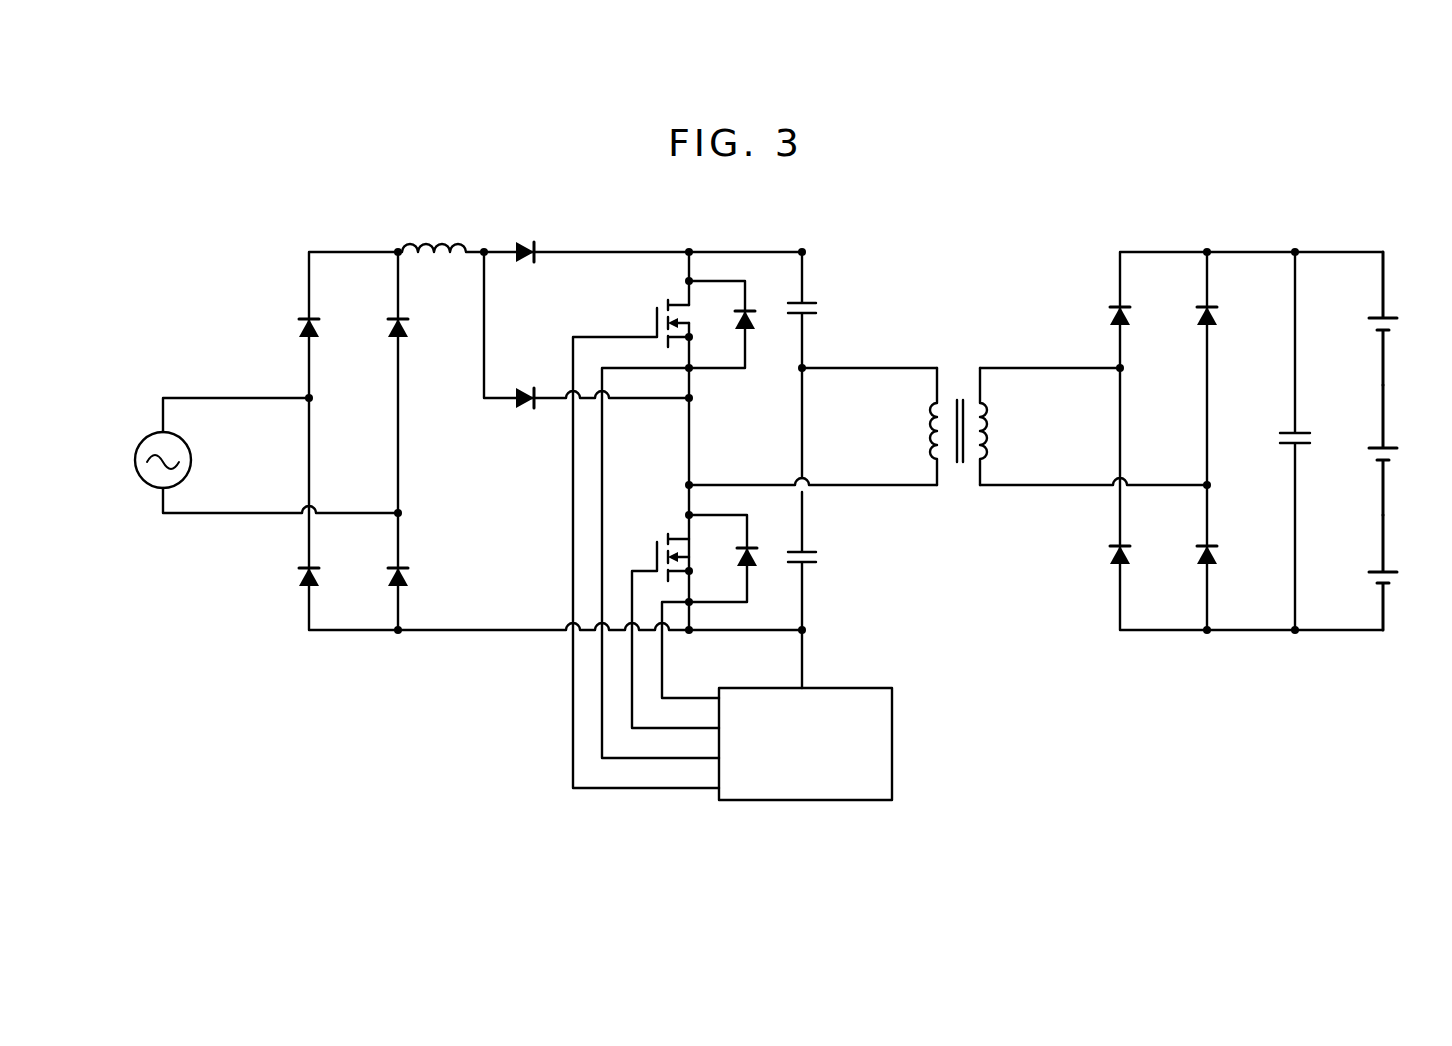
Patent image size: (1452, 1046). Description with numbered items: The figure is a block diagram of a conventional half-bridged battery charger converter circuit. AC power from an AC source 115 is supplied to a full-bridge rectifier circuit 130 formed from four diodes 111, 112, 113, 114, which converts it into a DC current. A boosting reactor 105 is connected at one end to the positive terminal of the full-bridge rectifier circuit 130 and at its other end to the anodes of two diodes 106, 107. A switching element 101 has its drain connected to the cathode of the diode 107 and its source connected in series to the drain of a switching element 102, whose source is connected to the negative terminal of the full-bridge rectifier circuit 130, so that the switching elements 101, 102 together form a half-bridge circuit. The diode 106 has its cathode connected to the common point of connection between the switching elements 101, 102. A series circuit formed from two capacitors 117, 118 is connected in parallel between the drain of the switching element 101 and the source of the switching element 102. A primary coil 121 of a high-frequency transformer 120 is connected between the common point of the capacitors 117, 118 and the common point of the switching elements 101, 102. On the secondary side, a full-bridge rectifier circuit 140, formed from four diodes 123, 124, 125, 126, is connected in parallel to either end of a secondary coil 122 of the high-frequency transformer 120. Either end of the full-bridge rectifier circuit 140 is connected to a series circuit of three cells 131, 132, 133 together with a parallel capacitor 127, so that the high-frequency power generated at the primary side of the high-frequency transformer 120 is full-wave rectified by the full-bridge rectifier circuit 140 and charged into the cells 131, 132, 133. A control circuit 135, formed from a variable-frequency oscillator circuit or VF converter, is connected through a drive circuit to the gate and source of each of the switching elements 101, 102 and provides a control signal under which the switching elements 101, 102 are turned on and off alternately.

The switching element 101 is at (601, 310).
The switching element 102 is at (612, 560).
The boosting reactor 105 is at (425, 240).
The diode 106 is at (521, 410).
The diode 107 is at (528, 233).
The diode 111 is at (298, 333).
The diode 112 is at (287, 637).
The diode 113 is at (408, 344).
The diode 114 is at (415, 578).
The AC source 115 is at (152, 498).
The capacitor 117 is at (838, 300).
The capacitor 118 is at (842, 572).
The high-frequency transformer 120 is at (961, 449).
The primary coil 121 is at (932, 413).
The secondary coil 122 is at (994, 418).
The diode 123 is at (1102, 321).
The diode 124 is at (1096, 608).
The diode 125 is at (1187, 318).
The diode 126 is at (1190, 608).
The capacitor 127 is at (1305, 455).
The full-bridge rectifier circuit 130 is at (357, 483).
The cell 131 is at (1398, 380).
The cell 132 is at (1400, 480).
The cell 133 is at (1400, 610).
The control circuit 135 is at (893, 773).
The full-bridge rectifier circuit 140 is at (1219, 499).